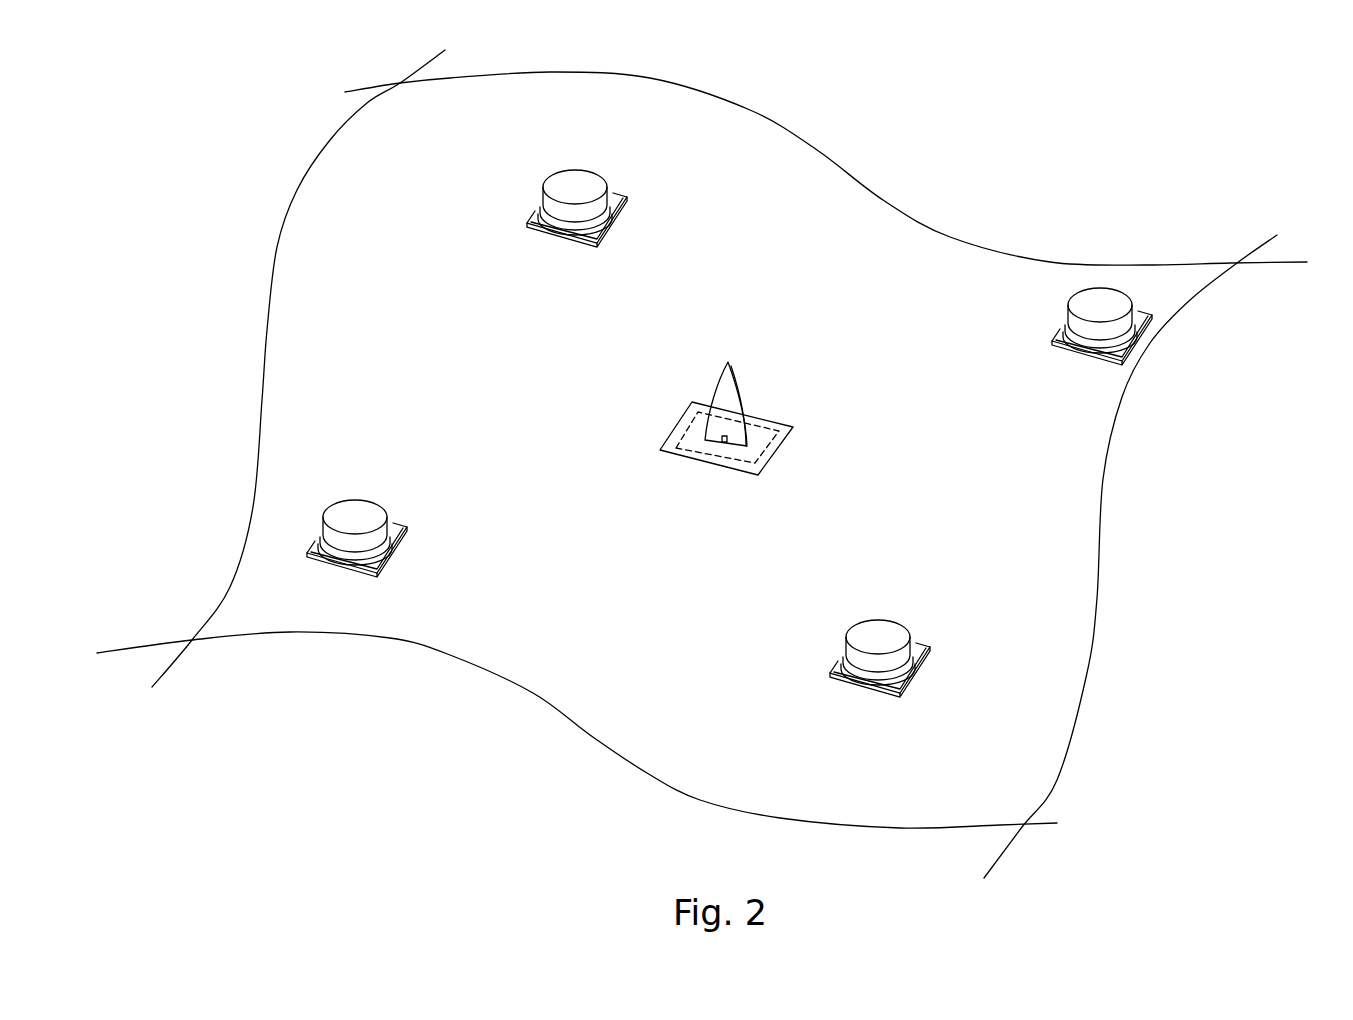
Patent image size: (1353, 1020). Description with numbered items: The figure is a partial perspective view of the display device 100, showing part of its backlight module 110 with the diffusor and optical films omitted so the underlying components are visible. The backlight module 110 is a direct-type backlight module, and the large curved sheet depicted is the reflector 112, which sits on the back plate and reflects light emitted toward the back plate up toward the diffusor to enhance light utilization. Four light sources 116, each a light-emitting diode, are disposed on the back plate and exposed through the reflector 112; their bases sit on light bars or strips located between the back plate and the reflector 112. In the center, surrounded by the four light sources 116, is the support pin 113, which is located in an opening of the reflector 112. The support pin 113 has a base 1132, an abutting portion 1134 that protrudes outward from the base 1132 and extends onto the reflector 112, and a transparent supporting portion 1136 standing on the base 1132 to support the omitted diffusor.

The display device 100 is at (180, 42).
The backlight module 110 is at (212, 381).
The reflector 112 is at (570, 669).
The support pin 113 is at (815, 436).
The base 1132 is at (738, 452).
The abutting portion 1134 is at (682, 450).
The transparent supporting portion 1136 is at (730, 387).
The light source 116 is at (578, 185).